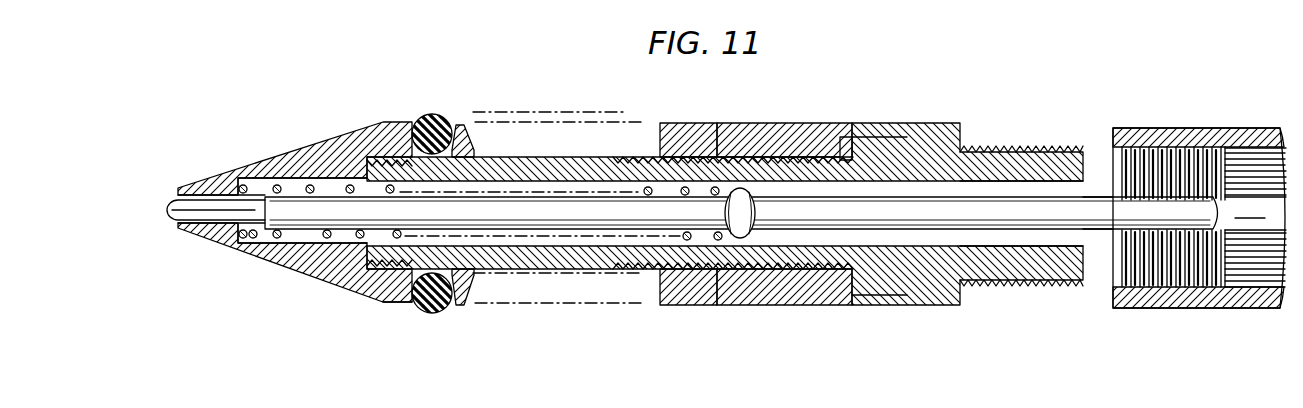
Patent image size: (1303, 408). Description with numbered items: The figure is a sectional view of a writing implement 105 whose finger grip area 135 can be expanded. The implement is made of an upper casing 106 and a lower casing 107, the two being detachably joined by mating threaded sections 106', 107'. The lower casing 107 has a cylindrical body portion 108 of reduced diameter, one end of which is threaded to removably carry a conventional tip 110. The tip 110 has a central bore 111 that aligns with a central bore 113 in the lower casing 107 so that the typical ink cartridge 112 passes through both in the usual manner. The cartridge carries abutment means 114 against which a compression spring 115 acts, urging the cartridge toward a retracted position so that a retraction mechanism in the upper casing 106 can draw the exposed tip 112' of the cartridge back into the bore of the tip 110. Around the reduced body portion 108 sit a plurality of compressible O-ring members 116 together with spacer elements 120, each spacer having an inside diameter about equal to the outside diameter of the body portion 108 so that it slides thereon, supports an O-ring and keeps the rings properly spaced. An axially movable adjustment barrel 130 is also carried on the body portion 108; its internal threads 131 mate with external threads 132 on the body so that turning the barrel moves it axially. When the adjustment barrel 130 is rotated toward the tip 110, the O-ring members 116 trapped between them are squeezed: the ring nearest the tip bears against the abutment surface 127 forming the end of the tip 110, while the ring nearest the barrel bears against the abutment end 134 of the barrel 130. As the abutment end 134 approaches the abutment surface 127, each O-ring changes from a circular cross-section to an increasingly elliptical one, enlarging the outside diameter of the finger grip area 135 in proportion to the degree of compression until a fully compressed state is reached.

The writing implement 105 is at (437, 340).
The upper casing 106 is at (1199, 232).
The threaded section 106' is at (1248, 217).
The lower casing 107 is at (725, 196).
The threaded section 107' is at (1021, 195).
The cylindrical body portion 108 is at (573, 138).
The tip 110 is at (257, 250).
The central bore 111 is at (257, 183).
The ink cartridge 112 is at (1090, 251).
The exposed tip 112' is at (189, 196).
The central bore 113 is at (997, 243).
The abutment means 114 is at (740, 243).
The compression spring 115 is at (327, 236).
The compressible O-ring member 116 is at (437, 114).
The spacer element 120 is at (471, 282).
The abutment end surface 127 is at (410, 305).
The adjustment barrel 130 is at (793, 127).
The internal threads 131 is at (715, 124).
The external threads 132 is at (633, 157).
The abutment end 134 is at (647, 303).
The finger grip area 135 is at (523, 110).